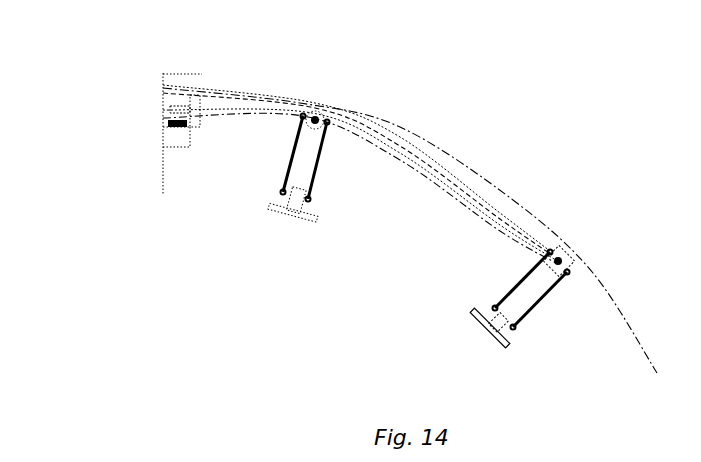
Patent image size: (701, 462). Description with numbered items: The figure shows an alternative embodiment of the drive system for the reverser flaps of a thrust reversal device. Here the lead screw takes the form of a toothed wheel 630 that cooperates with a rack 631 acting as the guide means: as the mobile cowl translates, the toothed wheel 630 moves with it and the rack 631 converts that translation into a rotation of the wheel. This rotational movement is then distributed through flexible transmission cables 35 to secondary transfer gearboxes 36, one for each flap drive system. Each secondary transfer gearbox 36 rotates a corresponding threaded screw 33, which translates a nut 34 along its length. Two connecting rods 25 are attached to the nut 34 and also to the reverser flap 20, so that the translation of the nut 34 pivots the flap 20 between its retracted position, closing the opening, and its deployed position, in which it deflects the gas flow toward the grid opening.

The reverser flap 20 is at (290, 214).
The connecting rod 25 is at (297, 162).
The threaded screw 33 is at (330, 116).
The nut 34 is at (315, 112).
The flexible transmission cable 35 is at (245, 113).
The secondary transfer gearbox 36 is at (332, 120).
The toothed wheel 630 is at (181, 108).
The rack 631 is at (172, 138).